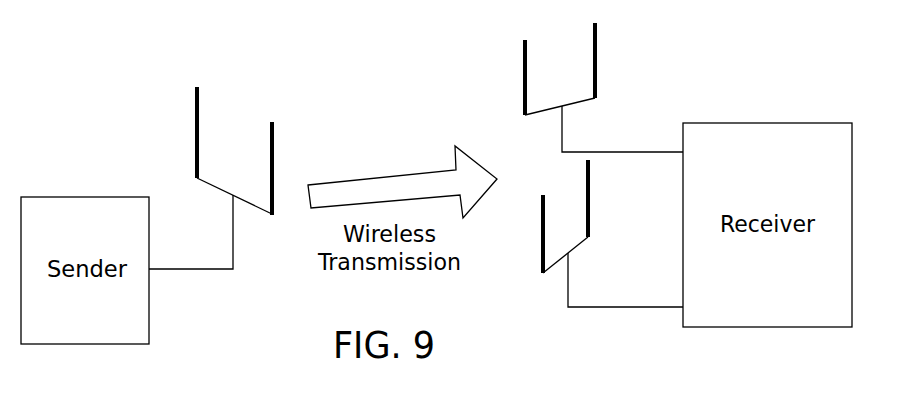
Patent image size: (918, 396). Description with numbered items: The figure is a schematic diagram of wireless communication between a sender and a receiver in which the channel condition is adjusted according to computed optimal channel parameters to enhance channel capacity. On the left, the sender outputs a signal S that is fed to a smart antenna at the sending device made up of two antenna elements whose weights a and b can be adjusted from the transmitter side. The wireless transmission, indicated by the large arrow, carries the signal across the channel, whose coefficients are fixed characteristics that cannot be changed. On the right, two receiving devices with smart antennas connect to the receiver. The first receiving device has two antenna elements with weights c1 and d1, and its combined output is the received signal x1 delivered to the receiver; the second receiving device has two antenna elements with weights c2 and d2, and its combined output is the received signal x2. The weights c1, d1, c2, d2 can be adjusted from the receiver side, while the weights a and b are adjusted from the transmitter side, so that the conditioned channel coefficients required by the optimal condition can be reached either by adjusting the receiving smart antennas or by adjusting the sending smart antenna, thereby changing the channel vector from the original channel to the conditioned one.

The sender signal S is at (191, 232).
The smart antenna weight of the sending device a is at (181, 132).
The smart antenna weight of the sending device b is at (287, 168).
The smart antenna weight of the first receiving device c1 is at (505, 77).
The smart antenna weight of the first receiving device d1 is at (617, 60).
The first received signal x1 is at (622, 129).
The smart antenna weight of the second receiving device c2 is at (526, 234).
The smart antenna weight of the second receiving device d2 is at (606, 198).
The second received signal x2 is at (625, 280).